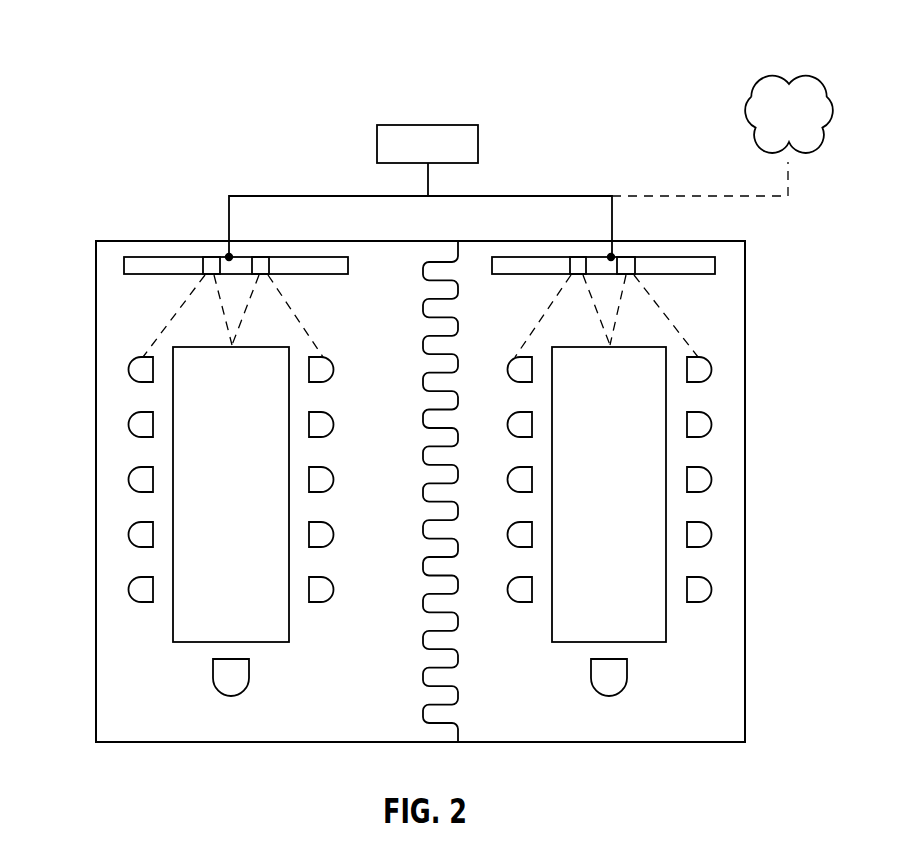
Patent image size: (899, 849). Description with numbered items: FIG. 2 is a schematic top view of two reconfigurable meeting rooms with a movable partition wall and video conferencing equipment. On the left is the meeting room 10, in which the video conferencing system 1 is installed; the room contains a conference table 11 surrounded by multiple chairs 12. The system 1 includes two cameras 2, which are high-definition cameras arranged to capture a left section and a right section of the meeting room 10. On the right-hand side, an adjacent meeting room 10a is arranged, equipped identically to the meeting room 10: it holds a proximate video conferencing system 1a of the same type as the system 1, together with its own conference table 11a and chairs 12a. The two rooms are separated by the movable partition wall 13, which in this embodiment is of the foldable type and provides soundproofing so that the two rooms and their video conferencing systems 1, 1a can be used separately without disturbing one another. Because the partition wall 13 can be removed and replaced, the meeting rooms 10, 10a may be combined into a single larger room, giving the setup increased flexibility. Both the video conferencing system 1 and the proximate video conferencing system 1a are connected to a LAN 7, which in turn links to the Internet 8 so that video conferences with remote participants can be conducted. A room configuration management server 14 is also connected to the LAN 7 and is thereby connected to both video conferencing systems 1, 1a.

The video conferencing system 1 is at (142, 264).
The proximate video conferencing system 1a is at (692, 262).
The camera 2 is at (213, 256).
The LAN 7 is at (558, 196).
The Internet 8 is at (802, 98).
The meeting room 10 is at (96, 312).
The adjacent meeting room 10a is at (732, 293).
The conference table 11 is at (255, 622).
The conference table 11a is at (632, 622).
The chair 12 is at (318, 422).
The chair 12a is at (697, 423).
The movable partition wall 13 is at (458, 658).
The room configuration management server 14 is at (448, 124).